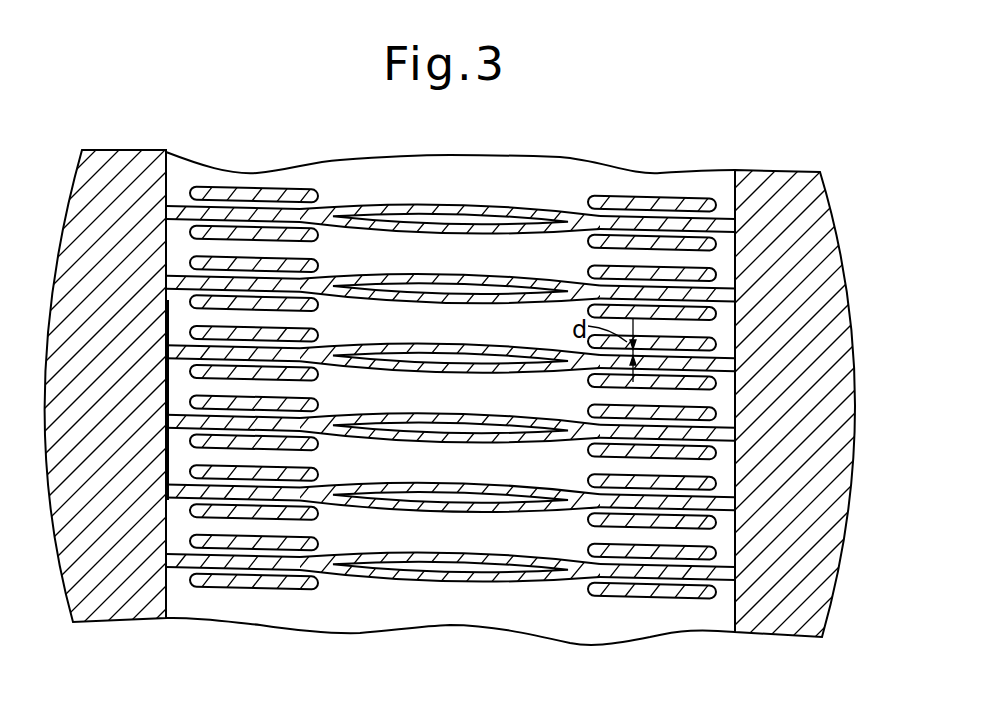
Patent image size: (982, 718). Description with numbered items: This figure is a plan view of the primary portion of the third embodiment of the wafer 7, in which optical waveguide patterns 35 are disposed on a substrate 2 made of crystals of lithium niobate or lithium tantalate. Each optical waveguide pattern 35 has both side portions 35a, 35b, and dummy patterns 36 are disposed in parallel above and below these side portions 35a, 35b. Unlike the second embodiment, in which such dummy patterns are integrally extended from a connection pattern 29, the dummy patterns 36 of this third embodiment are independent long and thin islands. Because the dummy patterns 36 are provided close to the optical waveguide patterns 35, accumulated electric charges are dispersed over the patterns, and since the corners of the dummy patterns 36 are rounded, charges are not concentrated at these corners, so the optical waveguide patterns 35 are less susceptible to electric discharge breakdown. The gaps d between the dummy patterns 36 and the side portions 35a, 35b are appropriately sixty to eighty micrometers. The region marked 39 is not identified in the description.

The wafer 7 is at (833, 179).
The substrate 2 is at (402, 620).
The connection pattern 29 is at (770, 625).
The left side frame 39 is at (115, 600).
The optical waveguide pattern 35 is at (450, 414).
The side portion 35a is at (263, 570).
The side portion 35b is at (677, 580).
The dummy pattern 36 is at (228, 548).